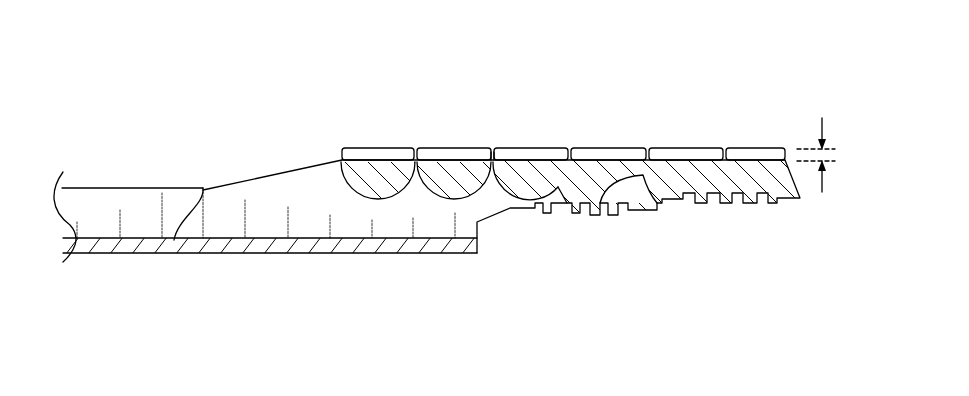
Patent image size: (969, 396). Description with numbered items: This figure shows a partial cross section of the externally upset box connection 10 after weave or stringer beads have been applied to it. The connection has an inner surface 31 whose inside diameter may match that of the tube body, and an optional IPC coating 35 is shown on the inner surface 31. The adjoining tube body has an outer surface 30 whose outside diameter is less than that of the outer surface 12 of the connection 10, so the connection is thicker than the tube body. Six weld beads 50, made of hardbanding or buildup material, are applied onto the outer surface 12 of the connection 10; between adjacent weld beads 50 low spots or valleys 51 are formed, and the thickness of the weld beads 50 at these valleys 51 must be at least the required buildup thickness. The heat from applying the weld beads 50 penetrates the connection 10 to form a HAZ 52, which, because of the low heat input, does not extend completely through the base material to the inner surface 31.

The externally upset box connection 10 is at (117, 50).
The outer surface of the externally upset box connection 12 is at (547, 162).
The outer surface of the tube body 30 is at (134, 187).
The inner surface 31 is at (200, 196).
The IPC coating 35 is at (130, 243).
The weld beads 50 is at (377, 148).
The valleys 51 is at (492, 148).
The HAZ 52 is at (340, 177).